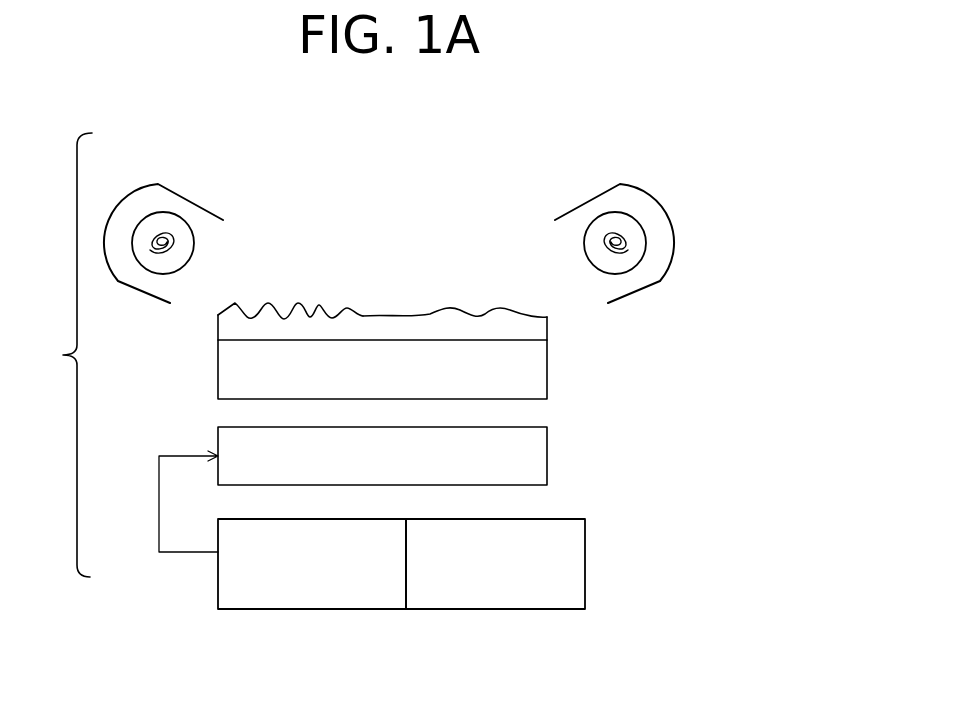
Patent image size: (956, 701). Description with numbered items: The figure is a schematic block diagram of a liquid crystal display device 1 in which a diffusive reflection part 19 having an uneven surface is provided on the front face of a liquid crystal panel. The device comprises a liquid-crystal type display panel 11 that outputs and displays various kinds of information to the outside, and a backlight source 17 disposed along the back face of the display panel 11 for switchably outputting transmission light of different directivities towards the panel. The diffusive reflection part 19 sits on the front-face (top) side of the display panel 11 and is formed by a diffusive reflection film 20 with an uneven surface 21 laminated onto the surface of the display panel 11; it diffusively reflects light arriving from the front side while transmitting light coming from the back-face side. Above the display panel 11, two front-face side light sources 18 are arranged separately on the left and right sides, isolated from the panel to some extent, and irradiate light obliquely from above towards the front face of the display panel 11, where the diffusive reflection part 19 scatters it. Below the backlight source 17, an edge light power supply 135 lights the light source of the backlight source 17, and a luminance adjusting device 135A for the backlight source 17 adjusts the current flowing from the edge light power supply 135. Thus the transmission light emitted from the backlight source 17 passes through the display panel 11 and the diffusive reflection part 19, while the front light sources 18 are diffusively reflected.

The liquid crystal display device 1 is at (50, 364).
The display panel 11 is at (547, 365).
The backlight source 17 is at (547, 457).
The front-face side light source 18 is at (158, 186).
The diffusive reflection part 19 is at (382, 266).
The diffusive reflection film 20 is at (372, 330).
The uneven surface 21 is at (365, 244).
The edge light power supply 135 is at (350, 609).
The luminance adjusting device 135A is at (530, 609).